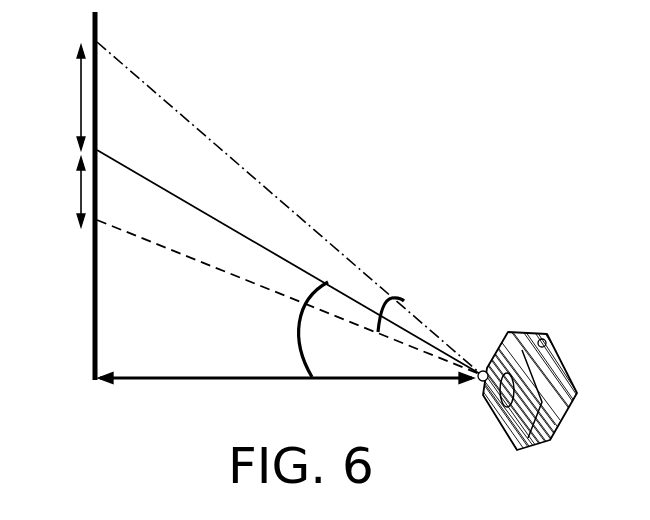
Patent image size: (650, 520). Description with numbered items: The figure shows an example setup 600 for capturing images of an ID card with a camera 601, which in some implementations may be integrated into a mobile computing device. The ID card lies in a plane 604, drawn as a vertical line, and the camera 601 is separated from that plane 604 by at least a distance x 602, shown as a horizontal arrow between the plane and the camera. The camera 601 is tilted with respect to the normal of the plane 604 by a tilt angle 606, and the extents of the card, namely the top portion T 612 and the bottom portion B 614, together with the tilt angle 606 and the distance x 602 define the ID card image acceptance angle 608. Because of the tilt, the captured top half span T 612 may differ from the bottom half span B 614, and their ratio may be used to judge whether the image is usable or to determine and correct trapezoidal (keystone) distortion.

The setup 600 is at (283, 34).
The camera 601 is at (558, 352).
The distance x 602 is at (212, 380).
The plane of the ID card 604 is at (93, 290).
The tilt angle 606 is at (299, 347).
The ID card image acceptance angle α 608 is at (408, 302).
The top half span T 612 is at (80, 68).
The bottom half span B 614 is at (80, 190).